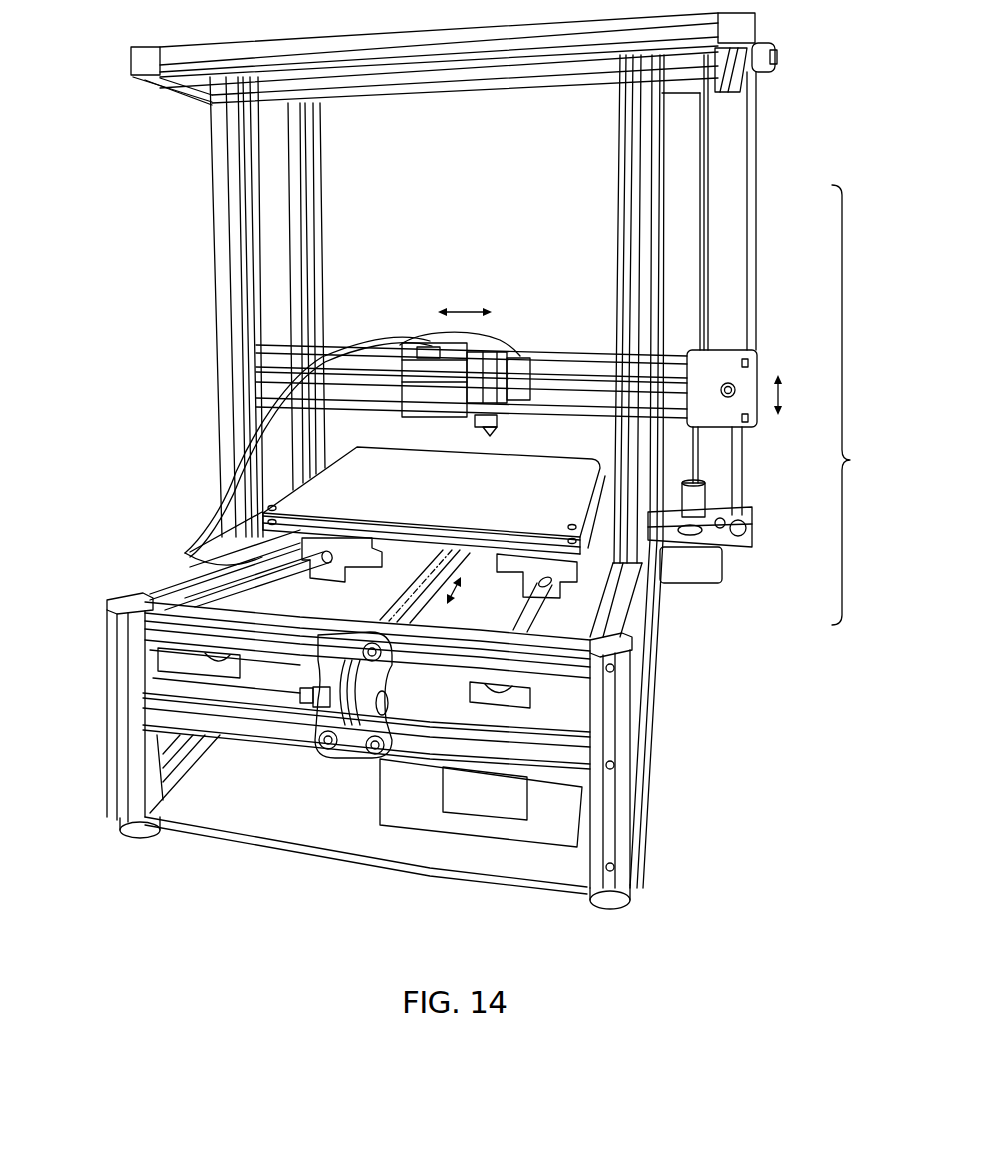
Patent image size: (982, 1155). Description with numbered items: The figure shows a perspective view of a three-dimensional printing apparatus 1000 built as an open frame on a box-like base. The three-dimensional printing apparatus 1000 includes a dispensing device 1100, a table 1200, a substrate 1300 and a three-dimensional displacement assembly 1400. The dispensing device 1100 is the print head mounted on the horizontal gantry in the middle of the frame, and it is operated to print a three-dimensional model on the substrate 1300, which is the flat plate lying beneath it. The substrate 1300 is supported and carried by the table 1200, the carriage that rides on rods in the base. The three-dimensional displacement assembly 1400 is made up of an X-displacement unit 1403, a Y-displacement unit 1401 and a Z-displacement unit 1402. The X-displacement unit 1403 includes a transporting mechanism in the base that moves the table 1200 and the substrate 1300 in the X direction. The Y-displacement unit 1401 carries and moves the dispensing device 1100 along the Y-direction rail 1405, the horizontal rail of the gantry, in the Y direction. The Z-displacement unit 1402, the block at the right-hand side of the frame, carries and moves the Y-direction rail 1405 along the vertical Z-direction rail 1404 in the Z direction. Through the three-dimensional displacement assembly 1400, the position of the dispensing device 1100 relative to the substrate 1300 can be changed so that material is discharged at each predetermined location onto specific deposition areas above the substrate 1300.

The 3-D printing apparatus 1000 is at (178, 322).
The dispensing device 1100 is at (522, 428).
The table 1200 is at (268, 556).
The substrate 1300 is at (350, 497).
The 3-D displacement assembly 1400 is at (582, 377).
The Y-displacement unit 1401 is at (496, 324).
The Z-displacement unit 1402 is at (758, 355).
The X-displacement unit 1403 is at (412, 696).
The Z-direction rail 1404 is at (748, 218).
The Y-direction rail 1405 is at (595, 358).